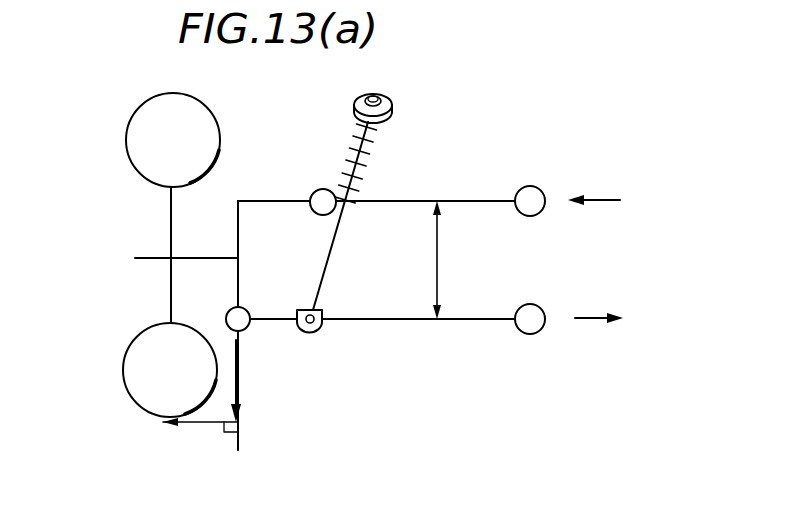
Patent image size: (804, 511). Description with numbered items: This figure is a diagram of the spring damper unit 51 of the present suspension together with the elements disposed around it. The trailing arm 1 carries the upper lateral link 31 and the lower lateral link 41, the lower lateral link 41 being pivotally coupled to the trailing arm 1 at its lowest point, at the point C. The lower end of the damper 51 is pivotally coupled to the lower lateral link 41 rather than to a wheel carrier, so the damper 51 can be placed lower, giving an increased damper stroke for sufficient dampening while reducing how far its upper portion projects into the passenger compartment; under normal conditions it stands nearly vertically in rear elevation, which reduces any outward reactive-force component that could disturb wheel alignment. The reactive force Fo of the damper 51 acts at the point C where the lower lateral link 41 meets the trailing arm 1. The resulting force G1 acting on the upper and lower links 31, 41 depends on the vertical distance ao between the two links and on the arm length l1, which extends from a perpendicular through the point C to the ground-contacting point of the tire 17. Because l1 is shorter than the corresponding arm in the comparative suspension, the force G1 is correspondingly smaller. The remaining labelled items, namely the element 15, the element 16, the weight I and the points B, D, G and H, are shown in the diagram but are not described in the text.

The trailing arm 1 is at (238, 226).
The support bar 15 is at (147, 257).
The counterweight assembly 16 is at (112, 340).
The tire 17 is at (123, 378).
The upper lateral link 31 is at (481, 199).
The lower lateral link 41 is at (408, 322).
The spring damper unit 51 is at (365, 150).
The balance weight I is at (378, 96).
The pivot point B is at (322, 192).
The point C is at (243, 311).
The pivot point D is at (316, 328).
The pivot point G is at (534, 208).
The pivot point H is at (528, 326).
The vertical distance a0 ao is at (447, 260).
The force G1 is at (621, 260).
The reactive force F0 Fo is at (260, 381).
The arm length l1 is at (200, 432).